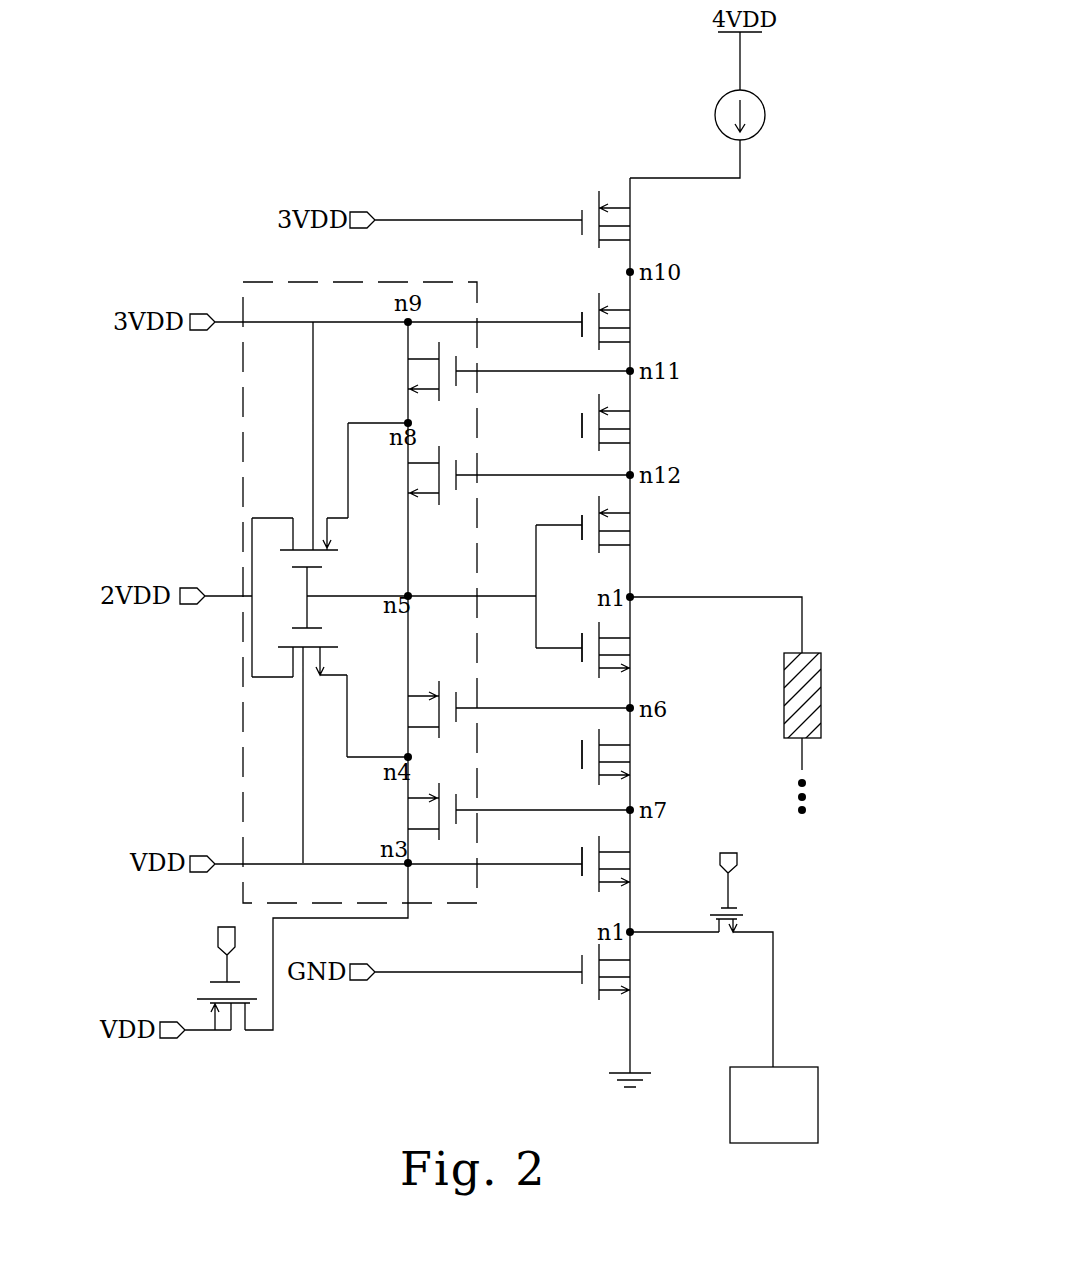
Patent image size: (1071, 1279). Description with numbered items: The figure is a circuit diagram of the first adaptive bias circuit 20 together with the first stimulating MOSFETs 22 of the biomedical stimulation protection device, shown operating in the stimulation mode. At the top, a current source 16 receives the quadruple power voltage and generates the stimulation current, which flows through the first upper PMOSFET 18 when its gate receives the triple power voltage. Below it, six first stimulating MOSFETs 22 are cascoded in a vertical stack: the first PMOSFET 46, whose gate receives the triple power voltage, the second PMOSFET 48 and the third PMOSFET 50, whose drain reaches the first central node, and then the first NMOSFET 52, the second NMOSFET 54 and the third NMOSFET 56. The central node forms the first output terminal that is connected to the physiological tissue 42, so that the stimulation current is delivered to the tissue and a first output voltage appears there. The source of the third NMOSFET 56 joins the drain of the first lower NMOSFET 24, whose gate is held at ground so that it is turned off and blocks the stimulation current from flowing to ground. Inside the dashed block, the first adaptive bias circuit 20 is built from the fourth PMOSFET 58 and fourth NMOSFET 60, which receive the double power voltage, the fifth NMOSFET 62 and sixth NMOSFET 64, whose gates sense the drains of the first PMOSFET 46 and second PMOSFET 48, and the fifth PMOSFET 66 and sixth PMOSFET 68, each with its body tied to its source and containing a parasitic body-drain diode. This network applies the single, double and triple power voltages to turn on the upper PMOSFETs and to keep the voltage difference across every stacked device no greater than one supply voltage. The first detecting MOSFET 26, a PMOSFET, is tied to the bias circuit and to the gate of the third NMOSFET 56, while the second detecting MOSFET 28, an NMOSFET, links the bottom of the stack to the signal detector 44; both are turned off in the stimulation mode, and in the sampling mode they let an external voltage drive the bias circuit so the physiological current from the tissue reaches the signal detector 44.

The current source 16 is at (765, 112).
The first upper PMOSFET 18 is at (632, 226).
The first adaptive bias circuit 20 is at (243, 280).
The first stimulating MOSFETs 22 is at (571, 314).
The first lower NMOSFET 24 is at (632, 977).
The first detecting MOSFET 26 is at (215, 1032).
The second detecting MOSFET 28 is at (740, 910).
The physiological tissue 42 is at (784, 712).
The signal detector 44 is at (798, 1065).
The first PMOSFET 46 is at (632, 328).
The second PMOSFET 48 is at (632, 429).
The third PMOSFET 50 is at (632, 531).
The first NMOSFET 52 is at (632, 655).
The second NMOSFET 54 is at (632, 762).
The third NMOSFET 56 is at (632, 869).
The fourth PMOSFET 58 is at (293, 518).
The fourth NMOSFET 60 is at (283, 679).
The fifth NMOSFET 62 is at (410, 387).
The sixth NMOSFET 64 is at (410, 488).
The fifth PMOSFET 66 is at (408, 713).
The sixth PMOSFET 68 is at (408, 813).